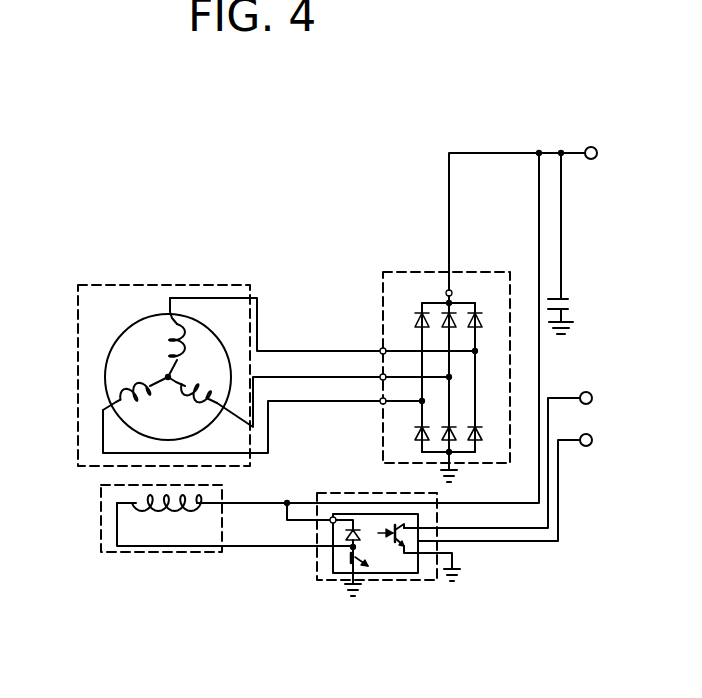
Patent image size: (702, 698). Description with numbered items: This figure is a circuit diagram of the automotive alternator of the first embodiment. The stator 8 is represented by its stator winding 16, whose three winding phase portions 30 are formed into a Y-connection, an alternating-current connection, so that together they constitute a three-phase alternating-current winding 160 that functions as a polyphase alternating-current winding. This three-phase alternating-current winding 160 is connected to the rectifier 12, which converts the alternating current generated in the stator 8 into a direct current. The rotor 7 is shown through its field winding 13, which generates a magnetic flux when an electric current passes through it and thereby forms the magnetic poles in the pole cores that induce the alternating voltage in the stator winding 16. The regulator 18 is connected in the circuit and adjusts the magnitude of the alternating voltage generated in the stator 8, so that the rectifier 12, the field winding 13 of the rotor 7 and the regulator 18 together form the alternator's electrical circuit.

The stator 8 is at (159, 286).
The stator winding 16 is at (118, 333).
The three-phase alternating-current winding 160 is at (213, 333).
The winding phase portion 30 is at (187, 338).
The rectifier 12 is at (405, 270).
The rotor 7 is at (103, 554).
The field winding 13 is at (170, 517).
The regulator 18 is at (322, 566).